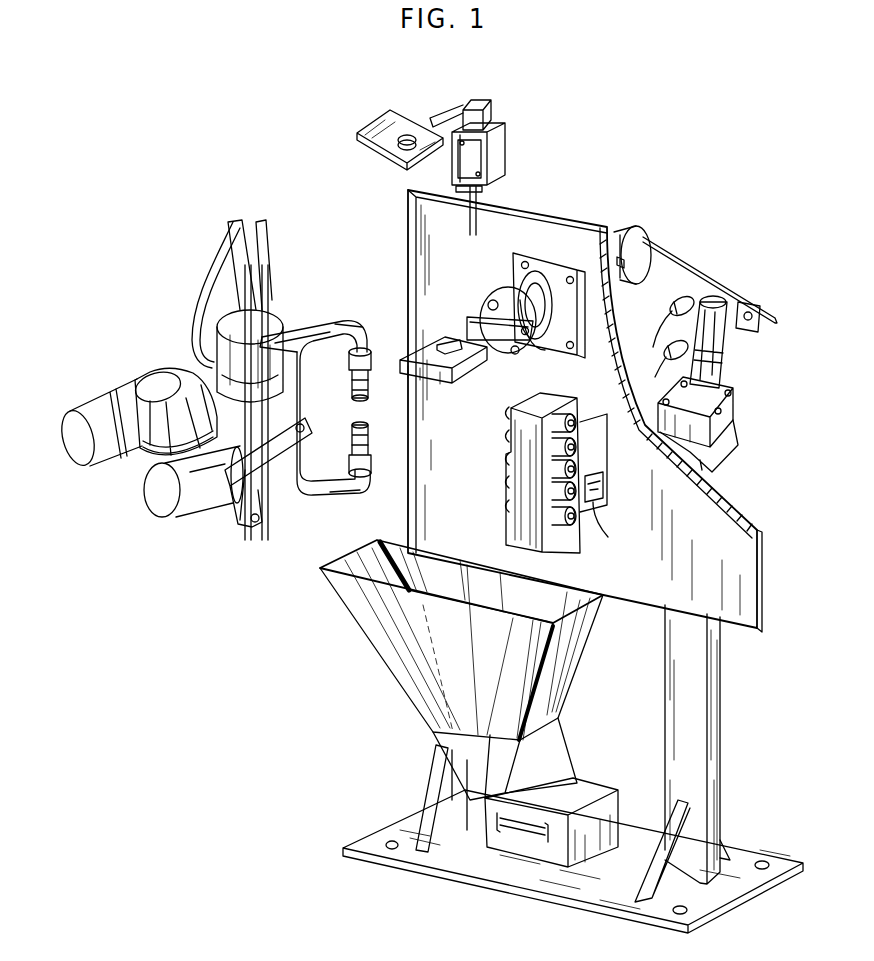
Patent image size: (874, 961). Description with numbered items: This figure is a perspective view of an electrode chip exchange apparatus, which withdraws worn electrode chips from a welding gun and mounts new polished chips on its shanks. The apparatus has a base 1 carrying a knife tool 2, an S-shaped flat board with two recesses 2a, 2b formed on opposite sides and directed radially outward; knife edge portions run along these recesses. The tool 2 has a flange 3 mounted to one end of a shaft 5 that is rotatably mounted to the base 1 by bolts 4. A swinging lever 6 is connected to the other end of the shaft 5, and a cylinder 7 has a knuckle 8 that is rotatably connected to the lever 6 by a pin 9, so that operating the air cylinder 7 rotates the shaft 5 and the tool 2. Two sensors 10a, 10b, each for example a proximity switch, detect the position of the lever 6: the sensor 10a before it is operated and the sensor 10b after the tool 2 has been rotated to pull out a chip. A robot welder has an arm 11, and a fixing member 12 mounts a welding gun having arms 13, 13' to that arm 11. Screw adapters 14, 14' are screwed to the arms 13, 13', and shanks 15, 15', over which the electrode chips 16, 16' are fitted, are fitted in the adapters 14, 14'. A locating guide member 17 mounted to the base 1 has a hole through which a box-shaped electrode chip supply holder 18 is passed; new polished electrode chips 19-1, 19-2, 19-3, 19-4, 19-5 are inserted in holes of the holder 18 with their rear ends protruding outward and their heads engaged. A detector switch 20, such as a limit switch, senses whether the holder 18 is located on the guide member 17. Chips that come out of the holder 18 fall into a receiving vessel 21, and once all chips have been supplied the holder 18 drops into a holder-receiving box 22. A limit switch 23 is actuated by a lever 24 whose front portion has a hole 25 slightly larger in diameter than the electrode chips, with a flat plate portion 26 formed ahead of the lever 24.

The base 1 is at (557, 214).
The knife tool 2 is at (422, 384).
The recess 2a is at (470, 322).
The recess 2b is at (438, 345).
The flange 3 is at (485, 305).
The bolts 4 is at (493, 300).
The shaft 5 is at (611, 232).
The swinging lever 6 is at (675, 268).
The cylinder 7 is at (690, 448).
The knuckle 8 is at (733, 350).
The pin 9 is at (752, 326).
The sensor 10a is at (695, 294).
The sensor 10b is at (686, 342).
The arm 11 is at (128, 388).
The fixing member 12 is at (290, 500).
The arm 13 is at (315, 392).
The arm 13' is at (239, 394).
The screw adapter 14 is at (348, 307).
The screw adapter 14' is at (364, 492).
The shank 15 is at (373, 351).
The shank 15' is at (375, 441).
The electrode chip 16 is at (341, 388).
The electrode chip 16' is at (341, 425).
The locating guide member 17 is at (505, 536).
The electrode chip supply holder 18 is at (540, 410).
The electrode chip 19-1 is at (572, 524).
The electrode chip 19-2 is at (618, 532).
The electrode chip 19-3 is at (577, 472).
The electrode chip 19-4 is at (577, 450).
The electrode chip 19-5 is at (565, 412).
The detector switch 20 is at (605, 502).
The receiving vessel 21 is at (397, 670).
The holder-receiving box 22 is at (615, 800).
The limit switch 23 is at (497, 148).
The lever 24 is at (440, 117).
The hole 25 is at (391, 155).
The flat plate portion 26 is at (383, 123).